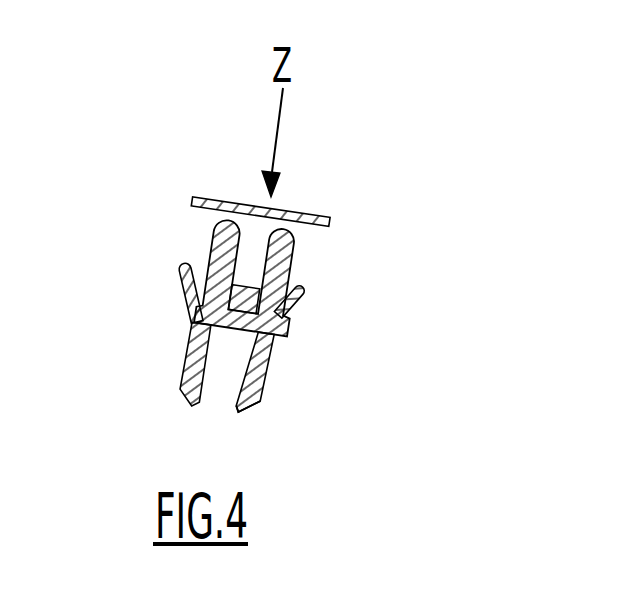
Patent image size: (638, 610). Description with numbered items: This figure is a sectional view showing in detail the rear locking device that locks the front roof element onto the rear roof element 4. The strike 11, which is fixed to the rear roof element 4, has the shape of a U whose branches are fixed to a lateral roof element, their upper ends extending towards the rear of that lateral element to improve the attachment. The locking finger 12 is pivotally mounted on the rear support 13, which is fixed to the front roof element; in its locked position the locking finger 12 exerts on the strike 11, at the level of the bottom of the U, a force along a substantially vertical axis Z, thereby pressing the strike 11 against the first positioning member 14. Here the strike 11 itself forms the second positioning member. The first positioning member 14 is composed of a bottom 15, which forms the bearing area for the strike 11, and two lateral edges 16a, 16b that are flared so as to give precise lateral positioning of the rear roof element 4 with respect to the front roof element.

The rear roof element 4 is at (297, 215).
The strike 11 is at (292, 254).
The locking finger 12 is at (283, 307).
The rear support 13 is at (243, 410).
The first positioning member 14 is at (268, 378).
The bottom 15 is at (195, 337).
The lateral edge 16a is at (180, 268).
The lateral edge 16b is at (303, 291).